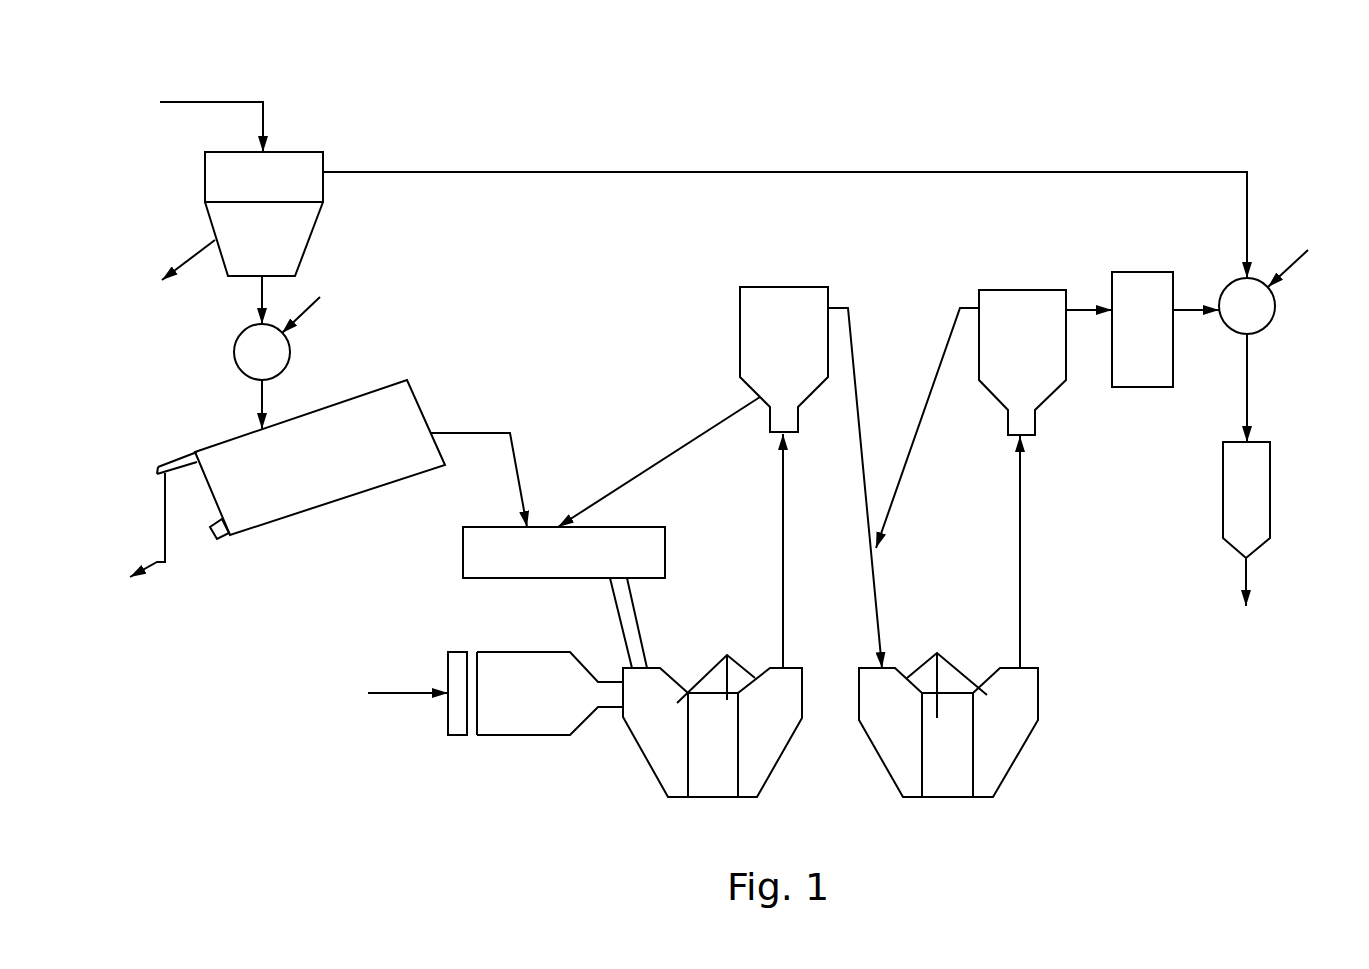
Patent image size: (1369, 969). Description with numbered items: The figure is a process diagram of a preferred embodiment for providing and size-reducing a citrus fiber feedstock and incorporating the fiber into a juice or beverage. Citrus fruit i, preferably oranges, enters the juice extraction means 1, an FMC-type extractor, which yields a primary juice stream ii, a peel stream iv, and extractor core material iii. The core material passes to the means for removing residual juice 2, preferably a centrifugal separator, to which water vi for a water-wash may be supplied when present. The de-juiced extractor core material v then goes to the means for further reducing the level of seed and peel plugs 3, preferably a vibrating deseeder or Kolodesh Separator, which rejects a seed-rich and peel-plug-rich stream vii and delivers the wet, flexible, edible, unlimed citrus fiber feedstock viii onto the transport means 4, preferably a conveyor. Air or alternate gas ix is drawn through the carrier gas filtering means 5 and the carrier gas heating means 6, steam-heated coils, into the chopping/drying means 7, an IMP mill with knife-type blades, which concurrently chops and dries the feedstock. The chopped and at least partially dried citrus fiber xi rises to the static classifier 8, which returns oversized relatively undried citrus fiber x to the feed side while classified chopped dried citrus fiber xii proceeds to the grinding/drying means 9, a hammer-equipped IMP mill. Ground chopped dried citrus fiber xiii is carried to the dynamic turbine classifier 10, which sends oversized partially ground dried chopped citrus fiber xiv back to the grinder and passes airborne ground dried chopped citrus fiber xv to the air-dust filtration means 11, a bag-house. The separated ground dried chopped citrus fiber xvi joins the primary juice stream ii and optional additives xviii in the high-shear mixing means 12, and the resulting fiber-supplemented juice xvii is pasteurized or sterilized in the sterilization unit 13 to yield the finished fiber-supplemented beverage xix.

The juice extraction means 1 is at (295, 152).
The means for removing residual juice from extractor core material 2 is at (233, 352).
The means for further reducing the level of seed and peel plugs 3 is at (300, 413).
The citrus fiber feedstock transport means 4 is at (472, 560).
The means for filtering carrier gas 5 is at (448, 665).
The means for heating carrier gas 6 is at (503, 735).
The means for chopping/drying citrus fiber feedstock 7 is at (712, 718).
The means for separating chopped dried citrus fiber feedstock from oversized relativ 8 is at (786, 310).
The means for grinding/drying chopped citrus fiber 9 is at (948, 716).
The means for separating ground dried chopped citrus fiber from oversized partially 10 is at (1027, 320).
The air-dust filtration means 11 is at (1146, 305).
The high-shear mixing means 12 is at (1243, 318).
The sterilization unit 13 is at (1244, 497).
The citrus fruit i is at (225, 102).
The primary juice stream ii is at (600, 172).
The extractor core material iii is at (258, 293).
The peel stream iv is at (215, 240).
The de-juiced extractor core material v is at (256, 395).
The water for water-wash vi is at (312, 315).
The seed-rich and peel-plug-rich stream vii is at (145, 525).
The wet, flexible, edible, unlimed citrus fiber feedstock viii is at (520, 470).
The air or alternate gas ix is at (410, 693).
The oversized relatively undried citrus fiber x is at (630, 477).
The chopped and at least partially dried citrus fiber xi is at (783, 570).
The classified chopped dried citrus fiber xii is at (848, 310).
The ground chopped dried citrus fiber xiii is at (1020, 580).
The oversized partially ground dried chopped citrus fiber xiv is at (898, 483).
The airborne ground dried chopped citrus fiber xv is at (1078, 310).
The ground dried chopped citrus fiber xvi is at (1192, 303).
The fiber-supplemented juice xvii is at (1250, 387).
The optional additives xviii is at (1301, 291).
The finished fiber-supplemented beverage xix is at (1246, 574).